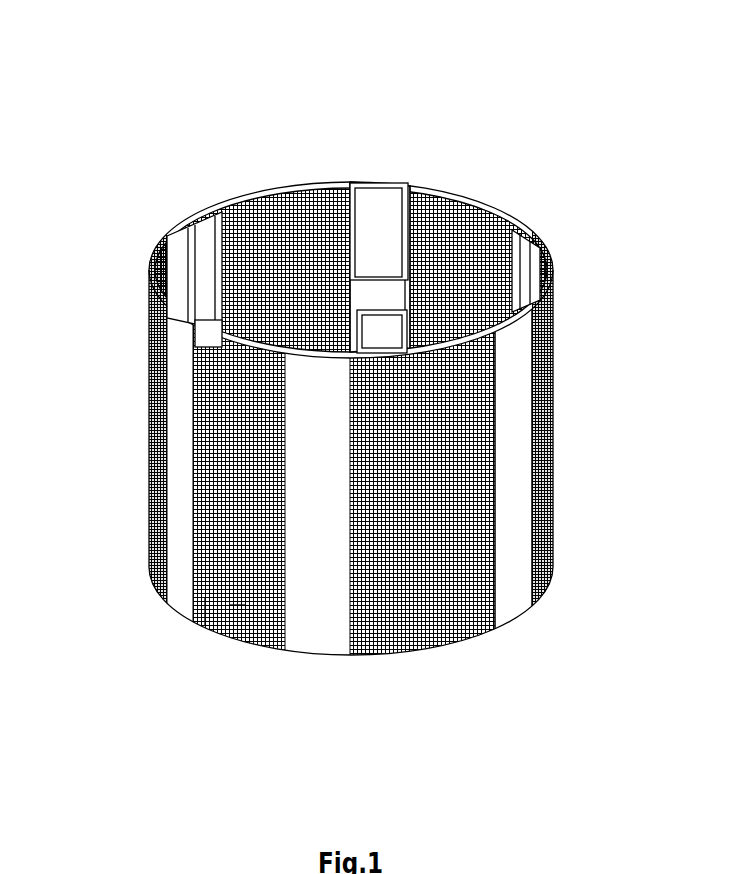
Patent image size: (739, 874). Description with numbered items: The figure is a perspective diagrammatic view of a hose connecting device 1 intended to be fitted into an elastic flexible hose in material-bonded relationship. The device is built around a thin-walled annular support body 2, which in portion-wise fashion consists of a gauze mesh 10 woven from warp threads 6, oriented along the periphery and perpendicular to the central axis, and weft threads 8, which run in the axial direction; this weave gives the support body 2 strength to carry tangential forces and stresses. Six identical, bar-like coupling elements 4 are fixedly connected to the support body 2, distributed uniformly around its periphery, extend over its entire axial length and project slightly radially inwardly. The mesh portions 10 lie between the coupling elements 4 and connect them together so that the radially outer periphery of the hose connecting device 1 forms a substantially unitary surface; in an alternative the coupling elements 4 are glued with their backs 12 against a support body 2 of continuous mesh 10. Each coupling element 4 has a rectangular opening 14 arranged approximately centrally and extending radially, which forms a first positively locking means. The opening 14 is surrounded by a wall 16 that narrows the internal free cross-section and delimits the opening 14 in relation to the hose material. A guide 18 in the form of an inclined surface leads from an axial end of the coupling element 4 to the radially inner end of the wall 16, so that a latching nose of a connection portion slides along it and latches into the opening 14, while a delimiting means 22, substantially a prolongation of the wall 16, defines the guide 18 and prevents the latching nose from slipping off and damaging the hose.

The hose connecting device 1 is at (152, 78).
The annular support body 2 is at (279, 178).
The coupling element 4 is at (183, 205).
The warp thread 6 is at (207, 612).
The weft thread 8 is at (238, 614).
The gauze mesh 10 is at (236, 196).
The back 12 is at (525, 462).
The opening 14 is at (362, 324).
The wall 16 is at (407, 299).
The guide 18 is at (377, 207).
The delimiting means 22 is at (353, 177).